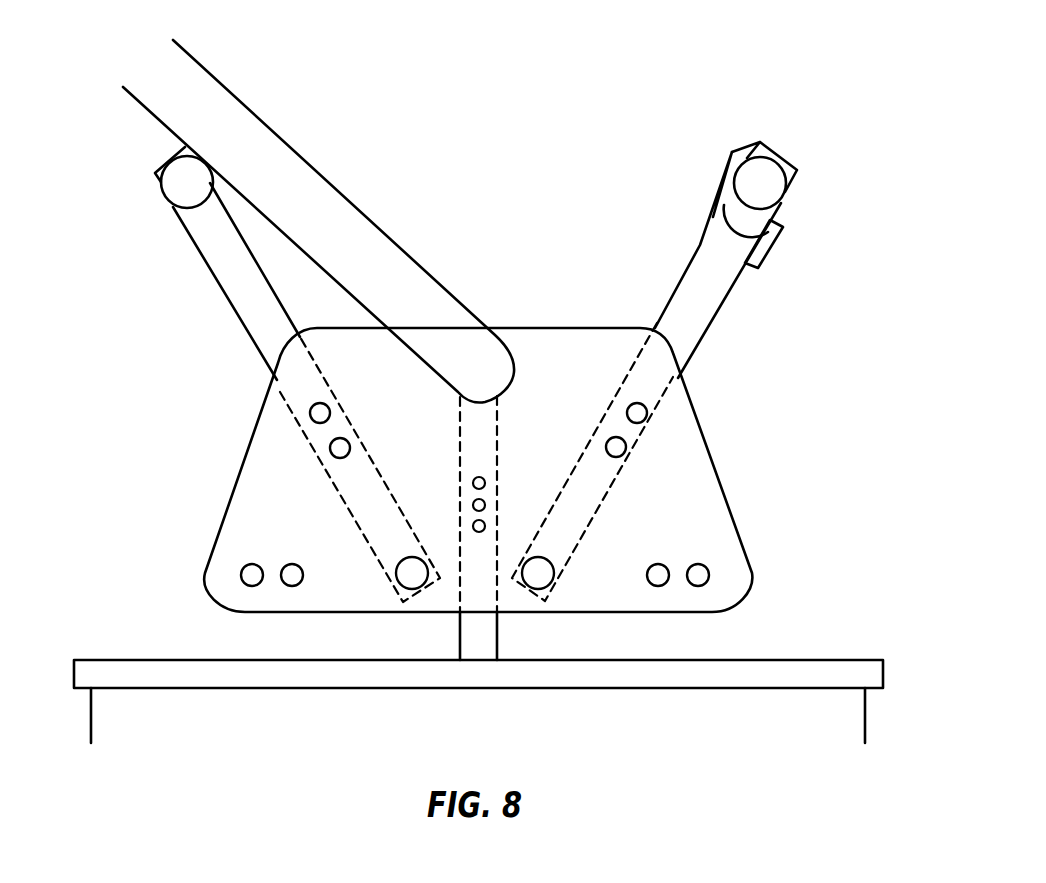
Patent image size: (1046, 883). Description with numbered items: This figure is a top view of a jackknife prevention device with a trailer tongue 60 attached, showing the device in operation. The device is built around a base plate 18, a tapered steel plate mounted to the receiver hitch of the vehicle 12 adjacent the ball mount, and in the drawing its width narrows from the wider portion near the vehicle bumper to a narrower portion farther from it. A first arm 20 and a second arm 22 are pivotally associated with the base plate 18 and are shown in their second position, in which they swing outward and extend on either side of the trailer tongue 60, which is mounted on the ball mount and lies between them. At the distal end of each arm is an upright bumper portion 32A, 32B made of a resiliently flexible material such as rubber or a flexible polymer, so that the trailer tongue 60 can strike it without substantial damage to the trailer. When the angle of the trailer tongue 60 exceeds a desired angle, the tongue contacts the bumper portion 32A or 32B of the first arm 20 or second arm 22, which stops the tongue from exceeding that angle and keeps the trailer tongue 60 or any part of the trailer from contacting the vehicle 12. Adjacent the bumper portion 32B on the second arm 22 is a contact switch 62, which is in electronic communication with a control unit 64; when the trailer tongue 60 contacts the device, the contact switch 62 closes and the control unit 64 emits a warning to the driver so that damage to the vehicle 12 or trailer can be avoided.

The vehicle 12 is at (865, 718).
The base plate 18 is at (722, 497).
The first arm 20 is at (230, 305).
The second arm 22 is at (713, 317).
The bumper portion 32A is at (160, 193).
The bumper portion 32B is at (787, 195).
The trailer tongue 60 is at (325, 178).
The contact switch 62 is at (733, 152).
The control unit 64 is at (770, 253).